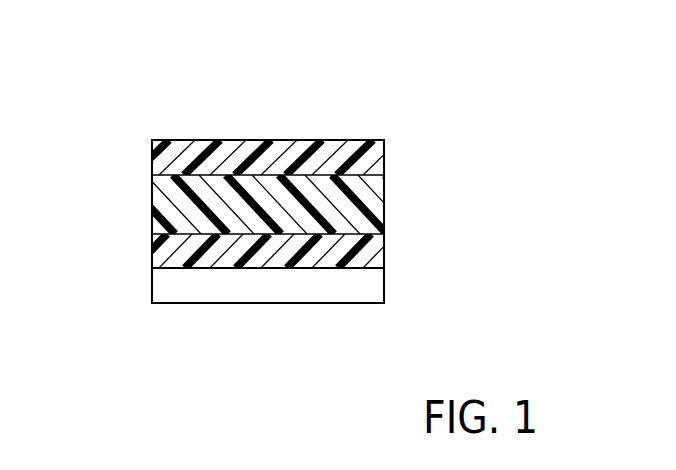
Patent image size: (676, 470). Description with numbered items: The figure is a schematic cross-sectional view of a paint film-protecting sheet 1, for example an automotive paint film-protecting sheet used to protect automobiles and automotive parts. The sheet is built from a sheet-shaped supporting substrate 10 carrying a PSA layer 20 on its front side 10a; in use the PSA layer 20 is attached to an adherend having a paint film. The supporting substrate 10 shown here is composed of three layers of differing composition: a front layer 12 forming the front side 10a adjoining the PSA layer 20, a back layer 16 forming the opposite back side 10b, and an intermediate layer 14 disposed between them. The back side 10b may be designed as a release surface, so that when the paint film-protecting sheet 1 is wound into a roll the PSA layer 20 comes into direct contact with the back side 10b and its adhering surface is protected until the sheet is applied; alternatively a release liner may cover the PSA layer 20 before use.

The paint film-protecting sheet 1 is at (369, 81).
The supporting substrate 10 is at (468, 150).
The front side of supporting substrate 10a is at (166, 268).
The back side of supporting substrate 10b is at (177, 140).
The front layer 12 is at (376, 253).
The intermediate layer 14 is at (376, 197).
The back layer 16 is at (376, 154).
The PSA layer 20 is at (358, 298).